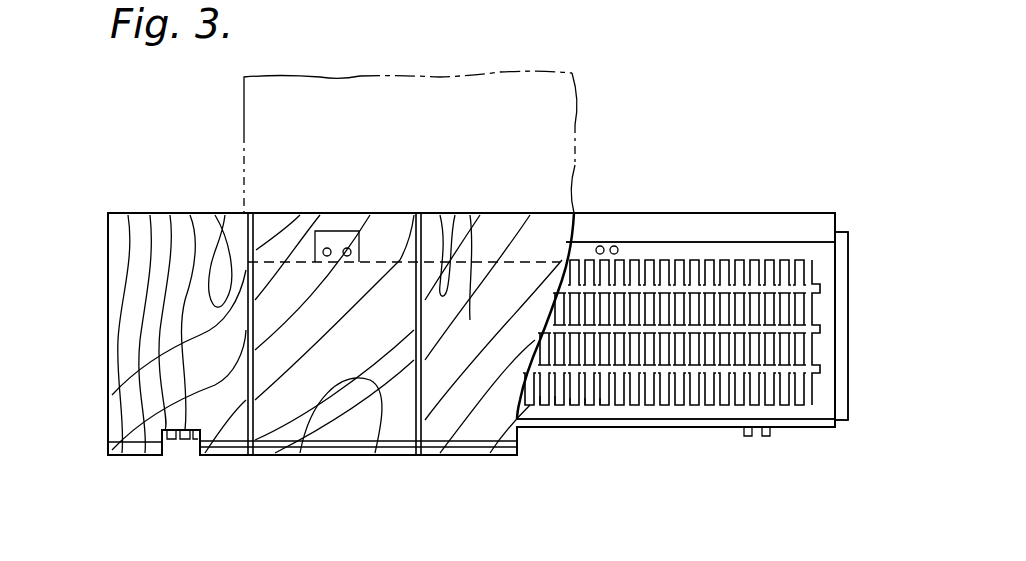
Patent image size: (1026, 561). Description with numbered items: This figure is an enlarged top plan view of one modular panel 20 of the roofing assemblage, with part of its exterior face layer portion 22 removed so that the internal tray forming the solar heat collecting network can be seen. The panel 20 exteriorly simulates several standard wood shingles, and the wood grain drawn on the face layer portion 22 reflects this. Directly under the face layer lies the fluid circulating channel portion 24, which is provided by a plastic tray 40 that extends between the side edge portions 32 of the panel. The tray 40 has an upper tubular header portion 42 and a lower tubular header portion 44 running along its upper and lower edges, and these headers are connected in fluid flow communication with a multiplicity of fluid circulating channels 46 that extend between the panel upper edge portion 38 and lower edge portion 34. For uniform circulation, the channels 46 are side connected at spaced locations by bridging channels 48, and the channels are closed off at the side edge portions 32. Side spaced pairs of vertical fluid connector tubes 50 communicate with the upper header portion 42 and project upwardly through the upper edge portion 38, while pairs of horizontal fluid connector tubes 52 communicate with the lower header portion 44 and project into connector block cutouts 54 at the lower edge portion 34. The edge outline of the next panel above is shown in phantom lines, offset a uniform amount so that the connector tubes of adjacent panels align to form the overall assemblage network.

The modular panel 20 is at (127, 210).
The exterior face layer portion 22 is at (370, 74).
The fluid circulating channel portion 24 is at (815, 315).
The side edge portion 32 is at (244, 136).
The lower edge portion 34 is at (333, 458).
The upper edge portion 38 is at (217, 213).
The plastic tray 40 is at (815, 352).
The upper tubular header portion 42 is at (770, 248).
The lower tubular header portion 44 is at (680, 414).
The fluid circulating channel 46 is at (600, 398).
The bridging channel 48 is at (556, 396).
The vertical fluid connector tube 50 is at (327, 248).
The horizontal fluid connector tube 52 is at (172, 442).
The connector block cutout 54 is at (172, 456).